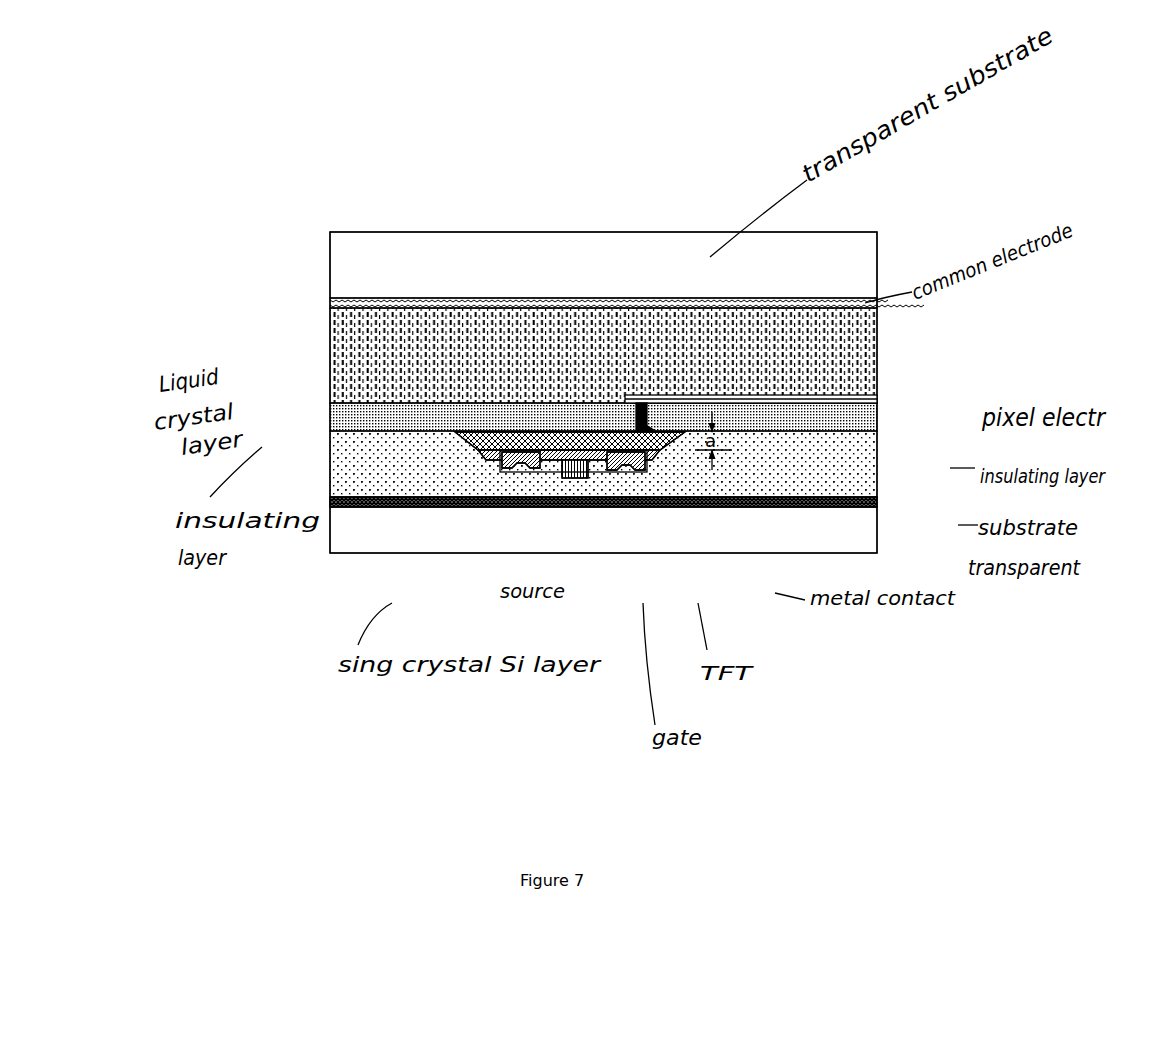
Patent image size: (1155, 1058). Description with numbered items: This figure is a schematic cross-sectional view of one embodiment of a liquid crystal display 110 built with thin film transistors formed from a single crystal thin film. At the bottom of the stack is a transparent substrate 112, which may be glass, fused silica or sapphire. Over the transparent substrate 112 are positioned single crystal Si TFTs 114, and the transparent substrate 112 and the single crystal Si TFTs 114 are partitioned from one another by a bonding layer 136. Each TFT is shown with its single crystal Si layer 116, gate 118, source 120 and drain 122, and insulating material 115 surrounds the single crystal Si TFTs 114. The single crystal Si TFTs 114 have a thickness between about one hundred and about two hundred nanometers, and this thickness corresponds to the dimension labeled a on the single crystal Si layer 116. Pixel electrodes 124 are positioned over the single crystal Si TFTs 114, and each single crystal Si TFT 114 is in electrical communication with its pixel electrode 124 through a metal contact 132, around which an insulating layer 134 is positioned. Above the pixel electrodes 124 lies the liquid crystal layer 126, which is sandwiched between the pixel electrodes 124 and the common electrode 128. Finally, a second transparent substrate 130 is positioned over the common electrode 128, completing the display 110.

The liquid crystal display 110 is at (558, 222).
The transparent substrate 112 is at (879, 526).
The single crystal Si TFT 114 is at (598, 462).
The insulating material 115 is at (879, 469).
The single crystal Si layer 116 is at (502, 440).
The gate 118 is at (580, 481).
The source 120 is at (522, 467).
The drain 122 is at (643, 463).
The pixel electrode 124 is at (975, 420).
The liquid crystal layer 126 is at (330, 358).
The common electrode 128 is at (330, 308).
The transparent substrate 130 is at (330, 262).
The metal contact 132 is at (680, 435).
The insulating layer 134 is at (330, 418).
The bonding layer 136 is at (330, 505).